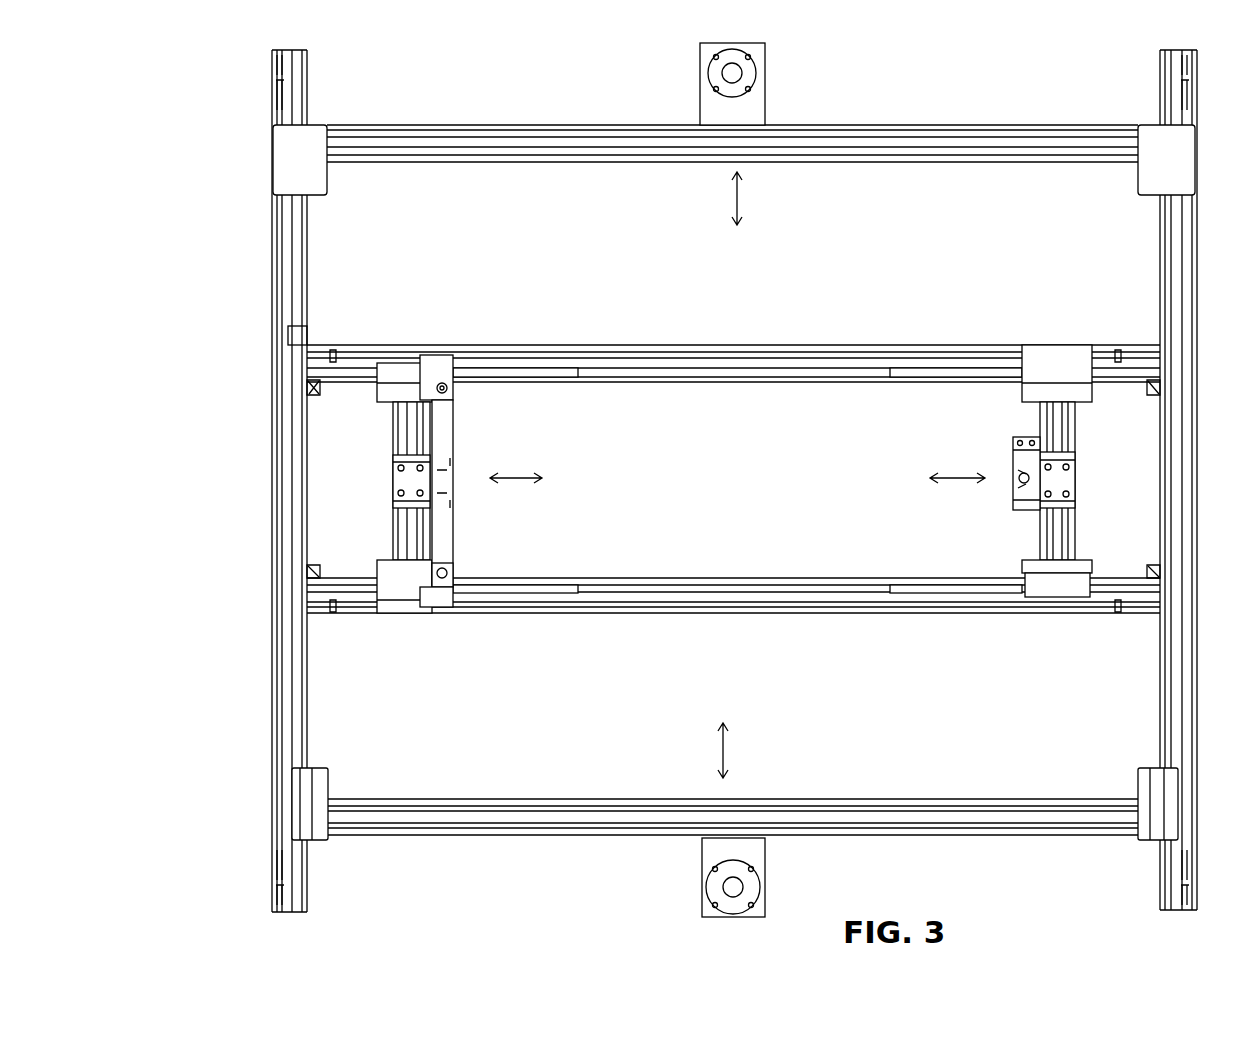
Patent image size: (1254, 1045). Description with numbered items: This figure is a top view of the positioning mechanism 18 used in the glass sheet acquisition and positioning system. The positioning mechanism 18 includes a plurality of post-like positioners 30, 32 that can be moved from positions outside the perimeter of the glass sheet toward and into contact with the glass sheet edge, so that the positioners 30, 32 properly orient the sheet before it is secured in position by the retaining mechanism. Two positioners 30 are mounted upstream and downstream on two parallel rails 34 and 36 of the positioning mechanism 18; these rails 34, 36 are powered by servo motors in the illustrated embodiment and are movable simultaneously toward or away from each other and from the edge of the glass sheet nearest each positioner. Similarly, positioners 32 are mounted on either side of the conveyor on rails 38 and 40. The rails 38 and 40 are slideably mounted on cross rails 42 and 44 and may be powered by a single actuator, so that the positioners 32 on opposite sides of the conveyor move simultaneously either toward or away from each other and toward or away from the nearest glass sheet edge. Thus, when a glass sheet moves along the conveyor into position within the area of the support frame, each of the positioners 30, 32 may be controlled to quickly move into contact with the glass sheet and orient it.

The positioning mechanism 18 is at (240, 103).
The positioner 30 is at (735, 75).
The positioner 32 is at (447, 385).
The rail 34 is at (912, 810).
The rail 36 is at (872, 130).
The rail 38 is at (1058, 413).
The rail 40 is at (405, 535).
The rail 42 is at (800, 585).
The rail 44 is at (768, 355).